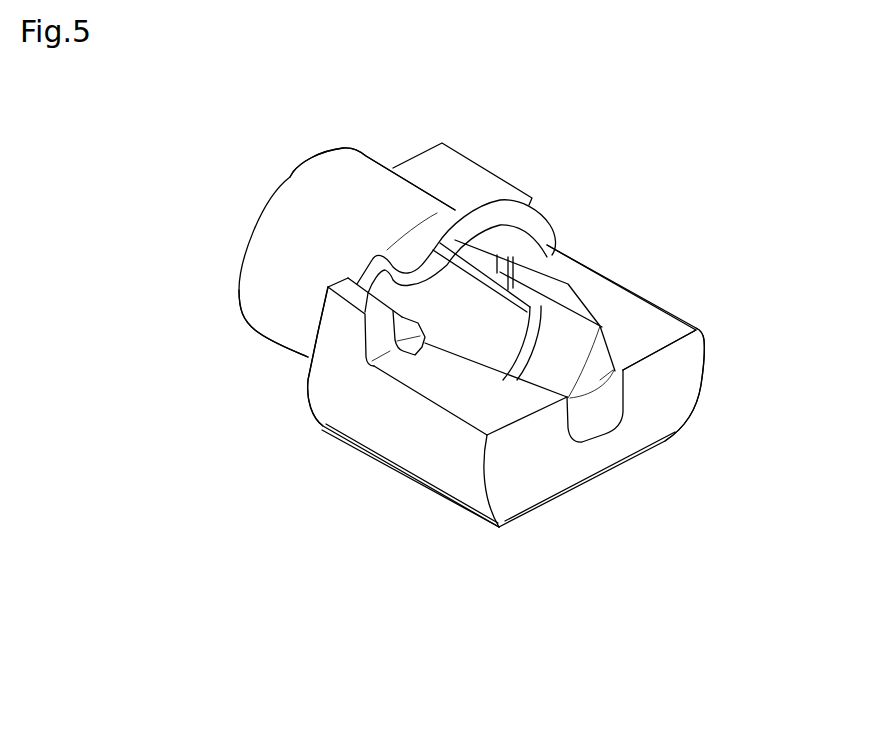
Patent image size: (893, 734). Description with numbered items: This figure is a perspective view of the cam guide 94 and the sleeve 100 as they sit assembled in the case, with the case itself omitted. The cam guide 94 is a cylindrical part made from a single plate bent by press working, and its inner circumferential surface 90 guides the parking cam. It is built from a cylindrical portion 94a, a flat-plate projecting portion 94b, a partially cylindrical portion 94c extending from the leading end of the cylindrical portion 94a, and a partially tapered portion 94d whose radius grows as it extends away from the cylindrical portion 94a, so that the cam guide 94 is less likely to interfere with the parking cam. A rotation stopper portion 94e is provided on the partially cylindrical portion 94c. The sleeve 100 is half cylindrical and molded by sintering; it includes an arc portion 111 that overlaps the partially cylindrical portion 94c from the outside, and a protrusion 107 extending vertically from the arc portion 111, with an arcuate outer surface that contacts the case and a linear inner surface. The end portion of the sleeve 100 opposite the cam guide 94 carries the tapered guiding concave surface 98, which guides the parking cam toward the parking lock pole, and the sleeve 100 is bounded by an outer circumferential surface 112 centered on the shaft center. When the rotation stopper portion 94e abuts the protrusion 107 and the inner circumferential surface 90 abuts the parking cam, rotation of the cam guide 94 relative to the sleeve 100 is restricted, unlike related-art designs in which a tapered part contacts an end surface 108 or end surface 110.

The inner circumferential surface 90 is at (470, 343).
The cam guide 94 is at (329, 130).
The cylindrical portion 94a is at (284, 204).
The projecting portion 94b is at (453, 158).
The partially cylindrical portion 94c is at (510, 290).
The partially tapered portion 94d is at (495, 200).
The rotation stopper portion 94e is at (407, 328).
The tapered guiding concave surface 98 is at (580, 288).
The sleeve 100 is at (721, 387).
The protrusion 107 is at (320, 322).
The end surface 108 is at (347, 285).
The end surface 110 is at (648, 322).
The arc portion 111 is at (540, 280).
The outer circumferential surface 112 is at (333, 400).